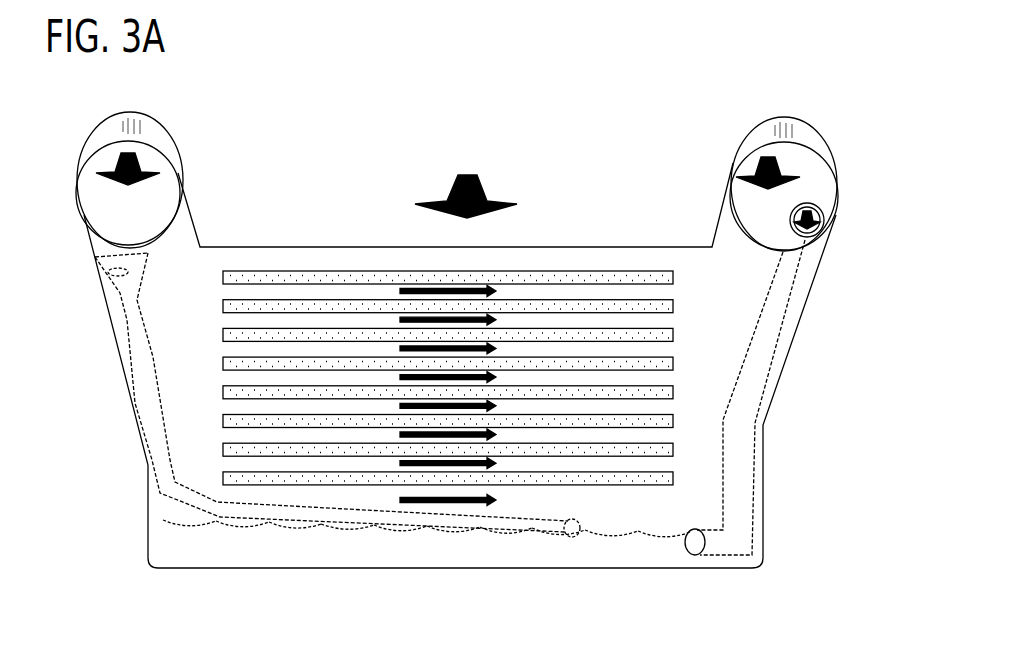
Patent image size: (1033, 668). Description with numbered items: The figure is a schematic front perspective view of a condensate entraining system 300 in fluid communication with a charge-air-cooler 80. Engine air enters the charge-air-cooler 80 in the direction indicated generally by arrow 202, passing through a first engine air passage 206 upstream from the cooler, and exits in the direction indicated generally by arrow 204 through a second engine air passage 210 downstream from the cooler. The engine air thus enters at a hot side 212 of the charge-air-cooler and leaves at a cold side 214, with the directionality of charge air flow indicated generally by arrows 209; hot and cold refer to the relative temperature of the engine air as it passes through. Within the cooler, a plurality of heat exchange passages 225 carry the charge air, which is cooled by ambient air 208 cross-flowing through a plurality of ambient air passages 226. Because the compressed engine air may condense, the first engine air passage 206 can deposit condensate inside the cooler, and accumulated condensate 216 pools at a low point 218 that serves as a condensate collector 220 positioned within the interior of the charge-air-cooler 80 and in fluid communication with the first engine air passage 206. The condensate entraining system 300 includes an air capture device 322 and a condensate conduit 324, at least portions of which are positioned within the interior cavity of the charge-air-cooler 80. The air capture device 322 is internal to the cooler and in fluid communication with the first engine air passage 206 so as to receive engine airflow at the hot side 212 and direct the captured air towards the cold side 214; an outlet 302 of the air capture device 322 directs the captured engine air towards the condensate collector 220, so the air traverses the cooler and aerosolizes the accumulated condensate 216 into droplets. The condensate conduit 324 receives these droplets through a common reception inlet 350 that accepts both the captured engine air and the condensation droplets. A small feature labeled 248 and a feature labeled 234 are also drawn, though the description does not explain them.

The condensate entraining system 300 is at (652, 40).
The charge-air-cooler 80 is at (318, 245).
The arrow indicating direction of engine airflow entering charge-air-cooler 202 is at (122, 152).
The first engine air passage 206 is at (128, 193).
The arrow indicating direction of engine airflow exiting charge-air-cooler 204 is at (766, 155).
The second engine air passage 210 is at (784, 196).
The condensate drain passage 248 is at (812, 219).
The hot side 212 is at (222, 213).
The cold side 214 is at (677, 220).
The ambient air 208 is at (430, 203).
The ambient air passages 226 is at (673, 336).
The arrows indicating directionality of charge air flow 209 is at (388, 398).
The heat exchange passages 225 is at (675, 381).
The duct opening 234 is at (98, 268).
The air capture device 322 is at (135, 358).
The condensate conduit 324 is at (751, 397).
The low point 218 is at (138, 482).
The condensate collector 220 is at (149, 545).
The accumulated condensate 216 is at (426, 538).
The outlet 302 is at (572, 540).
The common reception inlet 350 is at (695, 557).